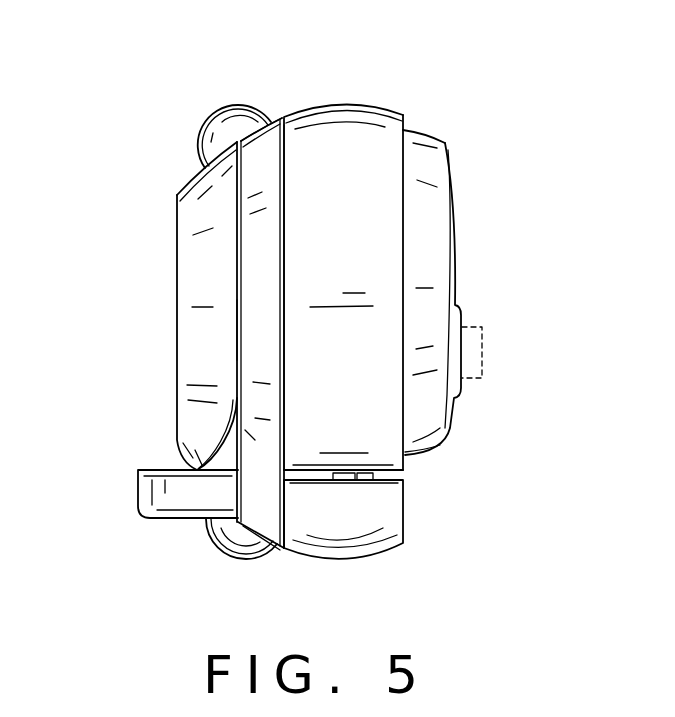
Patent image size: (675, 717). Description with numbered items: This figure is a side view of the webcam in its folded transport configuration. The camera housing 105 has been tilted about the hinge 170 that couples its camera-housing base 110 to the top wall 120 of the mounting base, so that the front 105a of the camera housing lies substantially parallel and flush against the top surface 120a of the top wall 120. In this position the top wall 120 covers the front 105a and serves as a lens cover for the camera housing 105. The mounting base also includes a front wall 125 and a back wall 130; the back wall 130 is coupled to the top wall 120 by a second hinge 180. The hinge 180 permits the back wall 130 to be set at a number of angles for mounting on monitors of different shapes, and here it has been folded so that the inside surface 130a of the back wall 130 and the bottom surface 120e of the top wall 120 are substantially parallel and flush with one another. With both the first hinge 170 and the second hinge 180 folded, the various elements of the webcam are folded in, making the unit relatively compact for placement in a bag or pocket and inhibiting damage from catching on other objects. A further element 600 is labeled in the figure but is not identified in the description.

The camera housing 105 is at (415, 110).
The front of the camera housing 105a is at (288, 226).
The camera-housing base 110 is at (417, 533).
The top wall 120 is at (263, 136).
The top surface of the top wall 120a is at (263, 136).
The bottom surface of the top wall 120e is at (240, 328).
The front wall 125 is at (137, 483).
The back wall 130 is at (183, 188).
The inside surface of the back wall 130a is at (237, 393).
The hinge 170 is at (220, 553).
The hinge 180 is at (223, 105).
The hinge 600 is at (373, 472).